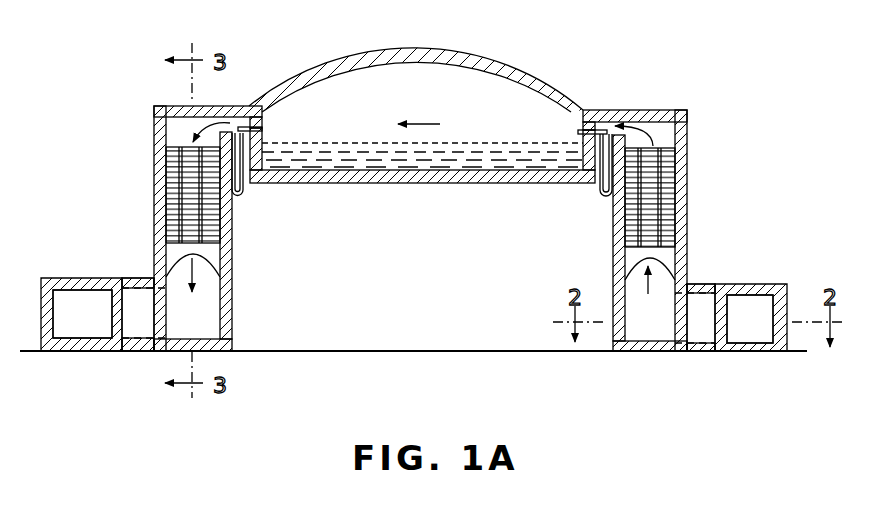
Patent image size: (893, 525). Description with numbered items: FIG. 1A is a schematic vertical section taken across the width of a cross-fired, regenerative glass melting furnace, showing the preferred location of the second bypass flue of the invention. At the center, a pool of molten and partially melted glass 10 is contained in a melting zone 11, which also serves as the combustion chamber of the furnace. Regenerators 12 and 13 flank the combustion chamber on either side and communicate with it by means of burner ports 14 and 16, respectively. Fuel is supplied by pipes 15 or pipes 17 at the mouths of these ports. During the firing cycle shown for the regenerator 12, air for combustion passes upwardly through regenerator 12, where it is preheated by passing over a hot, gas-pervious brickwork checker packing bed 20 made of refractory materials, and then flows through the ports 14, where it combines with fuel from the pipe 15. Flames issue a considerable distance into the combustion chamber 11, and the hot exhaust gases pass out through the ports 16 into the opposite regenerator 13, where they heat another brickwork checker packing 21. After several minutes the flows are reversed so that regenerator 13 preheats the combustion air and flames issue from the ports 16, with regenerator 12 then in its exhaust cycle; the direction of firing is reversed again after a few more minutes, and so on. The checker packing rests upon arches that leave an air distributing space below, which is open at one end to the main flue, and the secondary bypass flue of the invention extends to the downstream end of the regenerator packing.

The pool of molten and partially melted glass 10 is at (420, 168).
The melting zone 11 is at (428, 68).
The regenerator 12 is at (687, 145).
The regenerator 13 is at (155, 145).
The burner ports 14 is at (599, 128).
The pipes 15 is at (578, 131).
The burner ports 16 is at (250, 118).
The pipes 17 is at (262, 128).
The brickwork checker packing bed 20 is at (672, 210).
The brickwork checker packing 21 is at (166, 197).